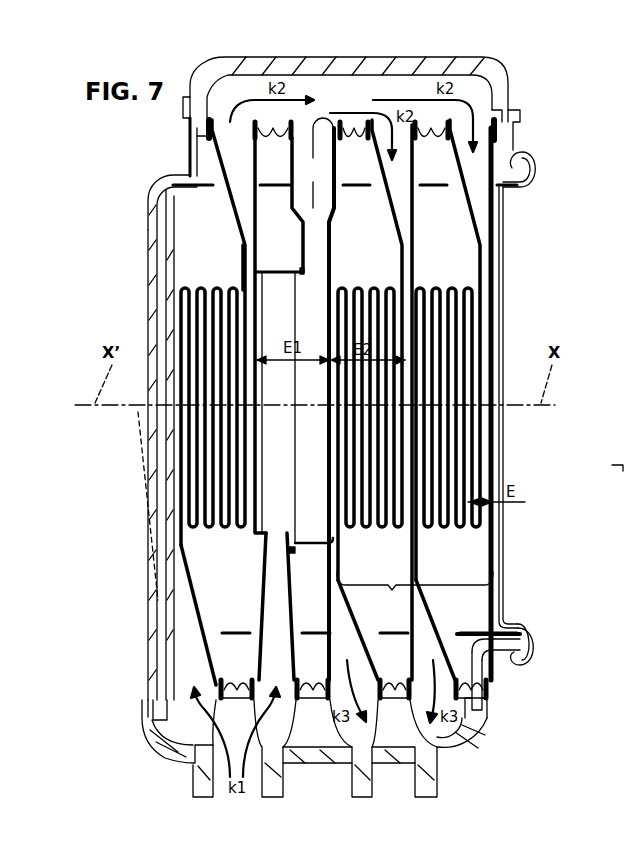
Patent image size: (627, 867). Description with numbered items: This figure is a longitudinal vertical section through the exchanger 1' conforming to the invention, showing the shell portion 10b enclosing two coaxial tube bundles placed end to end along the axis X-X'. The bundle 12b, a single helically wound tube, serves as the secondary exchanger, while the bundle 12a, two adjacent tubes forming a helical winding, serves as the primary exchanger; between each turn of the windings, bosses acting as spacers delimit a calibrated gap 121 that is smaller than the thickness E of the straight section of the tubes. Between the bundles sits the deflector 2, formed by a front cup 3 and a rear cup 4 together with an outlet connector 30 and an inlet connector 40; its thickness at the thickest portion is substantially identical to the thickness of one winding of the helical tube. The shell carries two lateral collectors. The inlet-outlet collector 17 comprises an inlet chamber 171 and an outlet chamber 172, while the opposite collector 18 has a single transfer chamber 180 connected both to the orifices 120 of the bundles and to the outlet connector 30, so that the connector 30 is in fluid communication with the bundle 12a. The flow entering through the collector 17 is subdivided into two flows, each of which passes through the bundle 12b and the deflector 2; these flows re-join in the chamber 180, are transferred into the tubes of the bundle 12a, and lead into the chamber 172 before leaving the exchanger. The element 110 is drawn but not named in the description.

The collector 18 is at (493, 56).
The transfer chamber 180 is at (350, 97).
The exchanger 1' is at (130, 183).
The portion of the shell 10b is at (134, 566).
The tube bundle 12b is at (223, 545).
The deflector 2 is at (237, 337).
The rear cup 4 is at (277, 270).
The inlet connector 40 is at (296, 606).
The outlet connector 30 is at (318, 330).
The front cup 3 is at (336, 282).
The tube bundle 12a is at (415, 400).
The gap 121 is at (472, 532).
The inlet chamber 171 is at (274, 702).
The outlet chamber 172 is at (432, 702).
The inlet-outlet collector 17 is at (479, 756).
The housing wall 110 is at (505, 213).
The orifice 120 is at (490, 155).